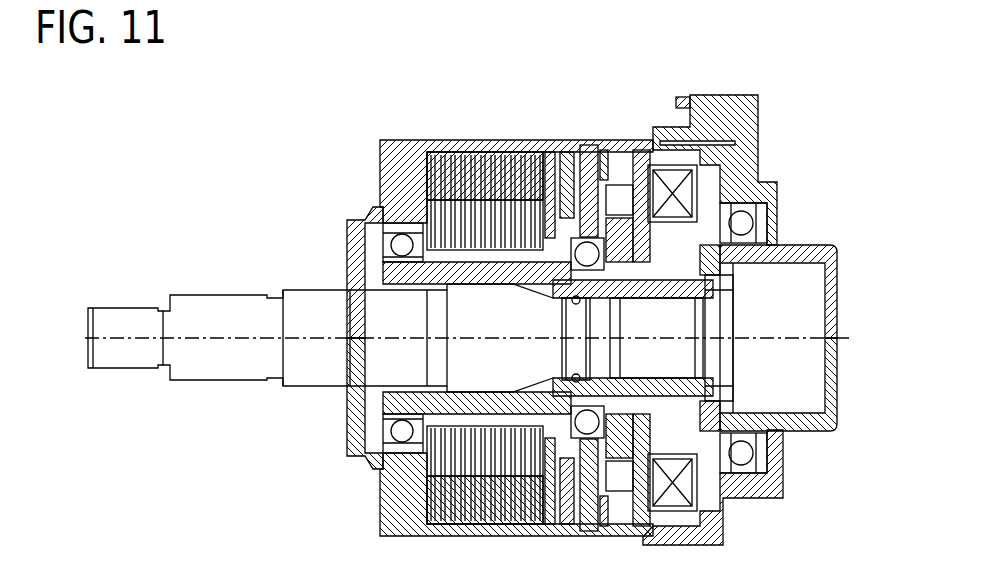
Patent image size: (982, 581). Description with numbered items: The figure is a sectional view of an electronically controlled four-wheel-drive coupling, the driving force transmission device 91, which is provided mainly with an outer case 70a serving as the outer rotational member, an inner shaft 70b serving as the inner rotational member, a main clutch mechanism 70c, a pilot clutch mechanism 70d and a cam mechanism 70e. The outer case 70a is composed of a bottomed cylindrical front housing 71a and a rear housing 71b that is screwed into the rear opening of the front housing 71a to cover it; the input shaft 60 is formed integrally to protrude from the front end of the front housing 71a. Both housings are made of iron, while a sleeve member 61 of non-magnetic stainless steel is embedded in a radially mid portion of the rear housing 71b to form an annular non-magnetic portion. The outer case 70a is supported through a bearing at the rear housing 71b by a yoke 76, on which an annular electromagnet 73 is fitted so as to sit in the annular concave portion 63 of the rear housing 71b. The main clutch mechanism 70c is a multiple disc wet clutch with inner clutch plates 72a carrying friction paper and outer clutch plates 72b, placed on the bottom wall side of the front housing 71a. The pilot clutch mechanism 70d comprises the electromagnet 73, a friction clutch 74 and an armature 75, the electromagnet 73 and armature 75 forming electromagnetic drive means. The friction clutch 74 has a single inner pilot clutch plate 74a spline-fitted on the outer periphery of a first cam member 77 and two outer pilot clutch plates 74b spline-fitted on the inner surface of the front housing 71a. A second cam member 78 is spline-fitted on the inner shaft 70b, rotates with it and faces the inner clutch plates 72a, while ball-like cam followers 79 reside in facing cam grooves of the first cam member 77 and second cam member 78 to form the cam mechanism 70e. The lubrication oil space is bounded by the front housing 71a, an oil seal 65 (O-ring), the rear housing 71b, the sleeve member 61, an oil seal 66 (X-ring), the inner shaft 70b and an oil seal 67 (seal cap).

The driving force transmission device 91 is at (808, 90).
The input shaft 60 is at (131, 314).
The sleeve member 61 is at (596, 192).
The annular concave portion 63 is at (670, 238).
The oil seal 65 is at (676, 108).
The oil seal 66 is at (725, 292).
The oil seal 67 is at (725, 362).
The outer case 70a is at (428, 138).
The inner shaft 70b is at (470, 266).
The main clutch mechanism 70c is at (516, 138).
The pilot clutch mechanism 70d is at (640, 183).
The cam mechanism 70e is at (542, 300).
The front housing 71a is at (385, 141).
The rear housing 71b is at (705, 125).
The inner clutch plates 72a is at (486, 285).
The outer clutch plates 72b is at (462, 165).
The electromagnet 73 is at (700, 250).
The friction clutch 74 is at (603, 148).
The inner pilot clutch plate 74a is at (622, 234).
The outer pilot clutch plates 74b is at (596, 143).
The armature 75 is at (566, 151).
The yoke 76 is at (787, 492).
The first cam member 77 is at (628, 301).
The second cam member 78 is at (534, 152).
The cam followers 79 is at (575, 306).